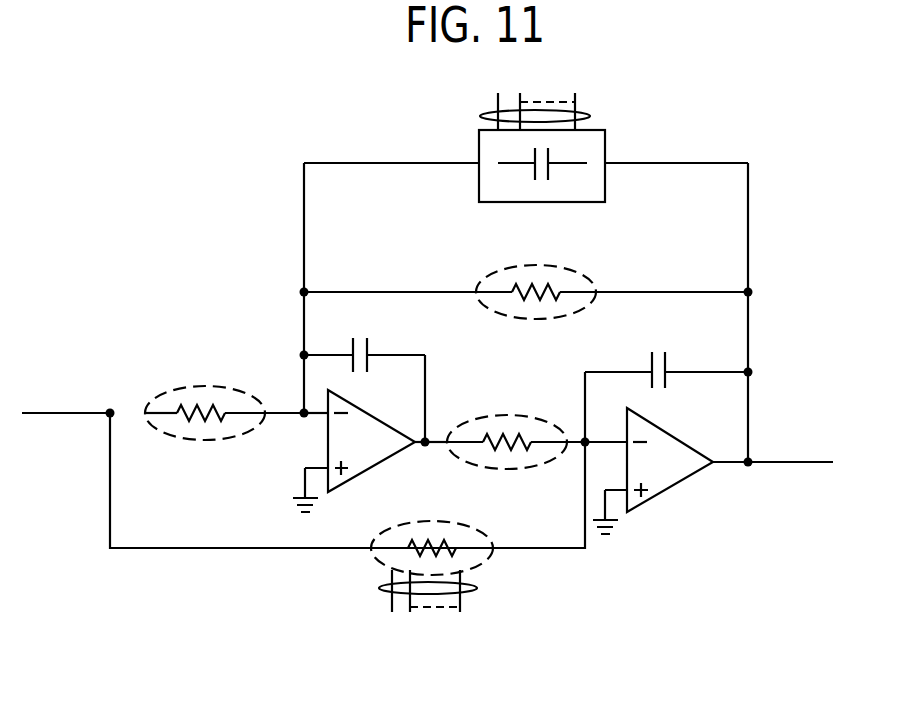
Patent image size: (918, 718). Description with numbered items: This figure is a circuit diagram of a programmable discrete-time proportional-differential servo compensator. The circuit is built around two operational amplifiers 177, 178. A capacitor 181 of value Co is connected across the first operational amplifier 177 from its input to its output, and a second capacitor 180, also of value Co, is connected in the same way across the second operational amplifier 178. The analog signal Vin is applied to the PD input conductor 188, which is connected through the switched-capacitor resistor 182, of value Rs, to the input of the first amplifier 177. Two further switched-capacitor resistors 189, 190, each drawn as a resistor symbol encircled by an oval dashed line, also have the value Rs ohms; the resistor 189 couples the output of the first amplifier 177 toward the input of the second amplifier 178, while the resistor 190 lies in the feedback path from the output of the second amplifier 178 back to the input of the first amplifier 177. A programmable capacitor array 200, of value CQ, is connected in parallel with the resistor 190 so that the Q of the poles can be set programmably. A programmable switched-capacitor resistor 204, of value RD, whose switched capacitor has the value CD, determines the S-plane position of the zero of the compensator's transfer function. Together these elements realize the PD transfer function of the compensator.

The PD input conductor 188 is at (73, 413).
The switched-capacitor resistor 182 is at (195, 385).
The capacitor 181 is at (358, 345).
The operational amplifier 177 is at (375, 452).
The switched-capacitor resistor 189 is at (517, 414).
The switched-capacitor resistor 190 is at (492, 272).
The programmable capacitor array 200 is at (479, 150).
The capacitor 180 is at (656, 353).
The operational amplifier 178 is at (673, 473).
The programmable switched-capacitor resistor 204 is at (430, 520).